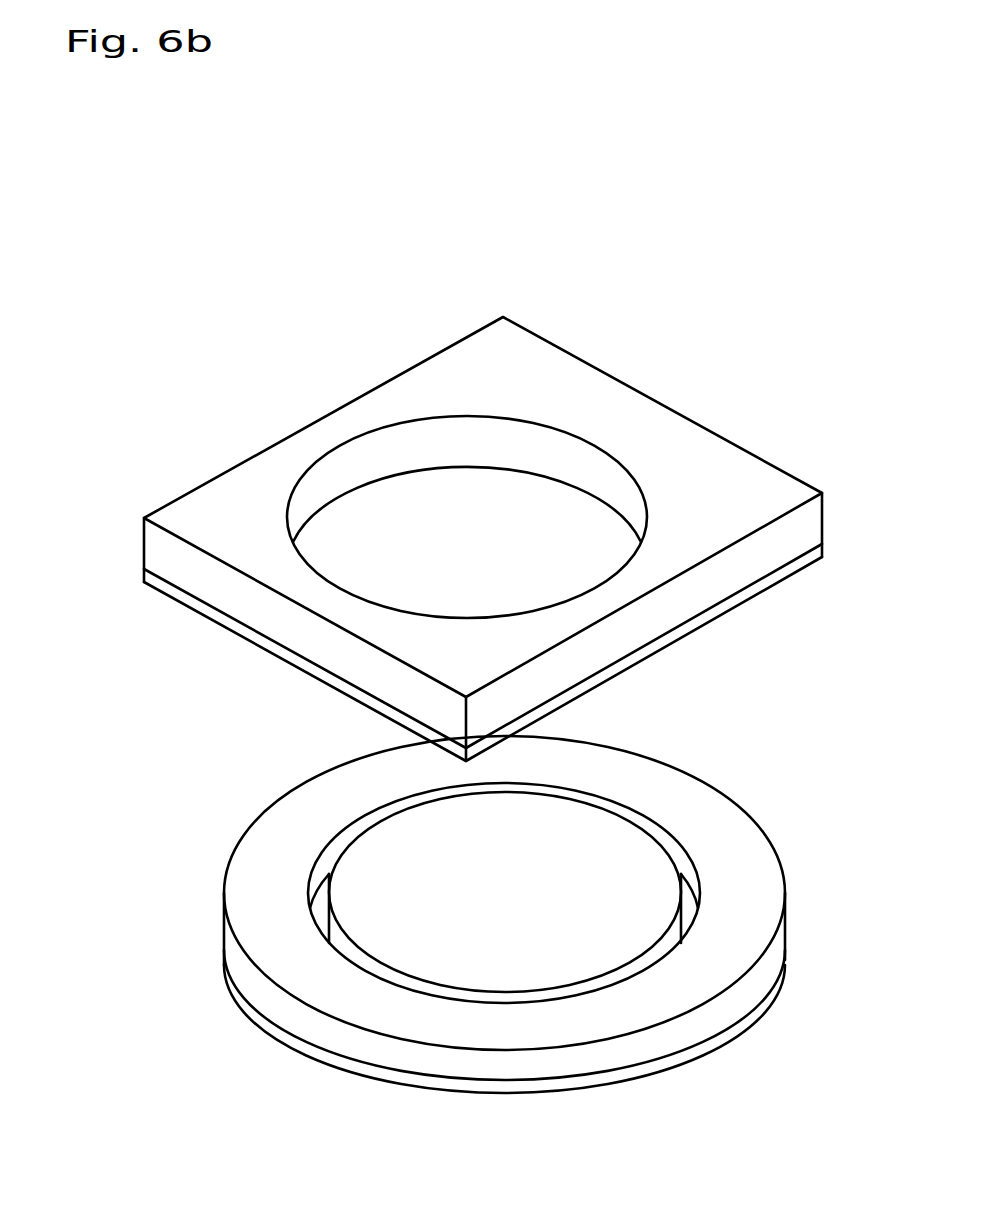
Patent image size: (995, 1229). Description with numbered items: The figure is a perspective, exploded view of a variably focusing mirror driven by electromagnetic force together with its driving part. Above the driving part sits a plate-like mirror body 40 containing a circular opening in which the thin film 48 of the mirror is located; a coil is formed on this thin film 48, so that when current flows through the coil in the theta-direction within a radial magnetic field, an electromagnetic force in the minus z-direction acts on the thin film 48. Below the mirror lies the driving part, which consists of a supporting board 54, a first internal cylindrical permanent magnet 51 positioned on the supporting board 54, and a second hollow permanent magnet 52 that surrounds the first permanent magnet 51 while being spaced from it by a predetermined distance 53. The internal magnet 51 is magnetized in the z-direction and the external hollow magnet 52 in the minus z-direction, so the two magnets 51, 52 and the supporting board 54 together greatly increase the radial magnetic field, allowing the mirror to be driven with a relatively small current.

The plate / cover with circular opening 40 is at (575, 390).
The thin film 48 is at (402, 541).
The first internal cylindrical permanent magnet 51 is at (582, 852).
The second hollow permanent magnet 52 is at (270, 874).
The predetermined distance 53 is at (695, 878).
The supporting board 54 is at (240, 983).